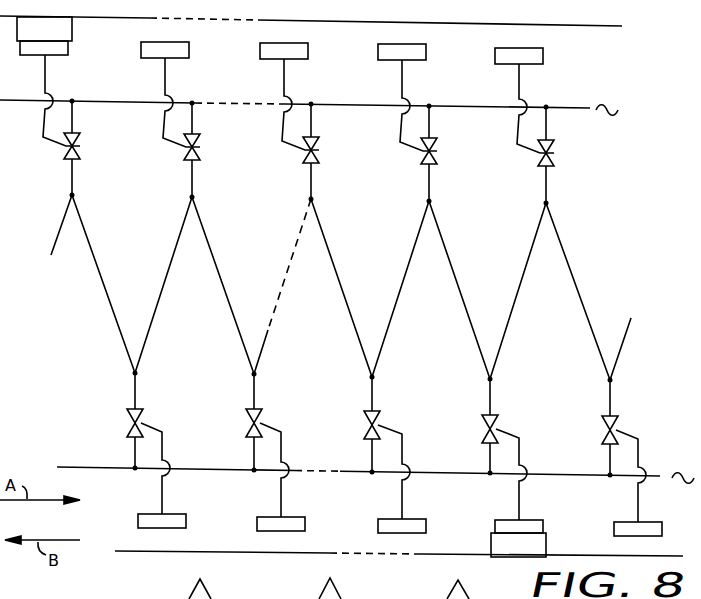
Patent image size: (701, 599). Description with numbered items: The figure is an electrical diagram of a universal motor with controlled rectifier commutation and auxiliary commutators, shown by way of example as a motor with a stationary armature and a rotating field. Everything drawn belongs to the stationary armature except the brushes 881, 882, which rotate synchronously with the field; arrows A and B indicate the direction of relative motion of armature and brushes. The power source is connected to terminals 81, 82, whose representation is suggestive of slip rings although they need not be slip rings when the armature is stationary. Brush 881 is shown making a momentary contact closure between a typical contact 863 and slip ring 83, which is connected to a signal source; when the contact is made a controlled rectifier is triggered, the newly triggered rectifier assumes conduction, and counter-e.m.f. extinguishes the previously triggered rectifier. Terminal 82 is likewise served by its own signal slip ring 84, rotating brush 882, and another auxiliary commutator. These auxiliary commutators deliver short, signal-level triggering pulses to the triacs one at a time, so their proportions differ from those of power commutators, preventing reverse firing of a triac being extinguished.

The terminal 81 is at (340, 471).
The terminal 82 is at (375, 104).
The slip ring 83 is at (331, 553).
The signal slip ring 84 is at (260, 21).
The contact 863 is at (527, 527).
The brush 881 is at (518, 546).
The brush 882 is at (44, 36).